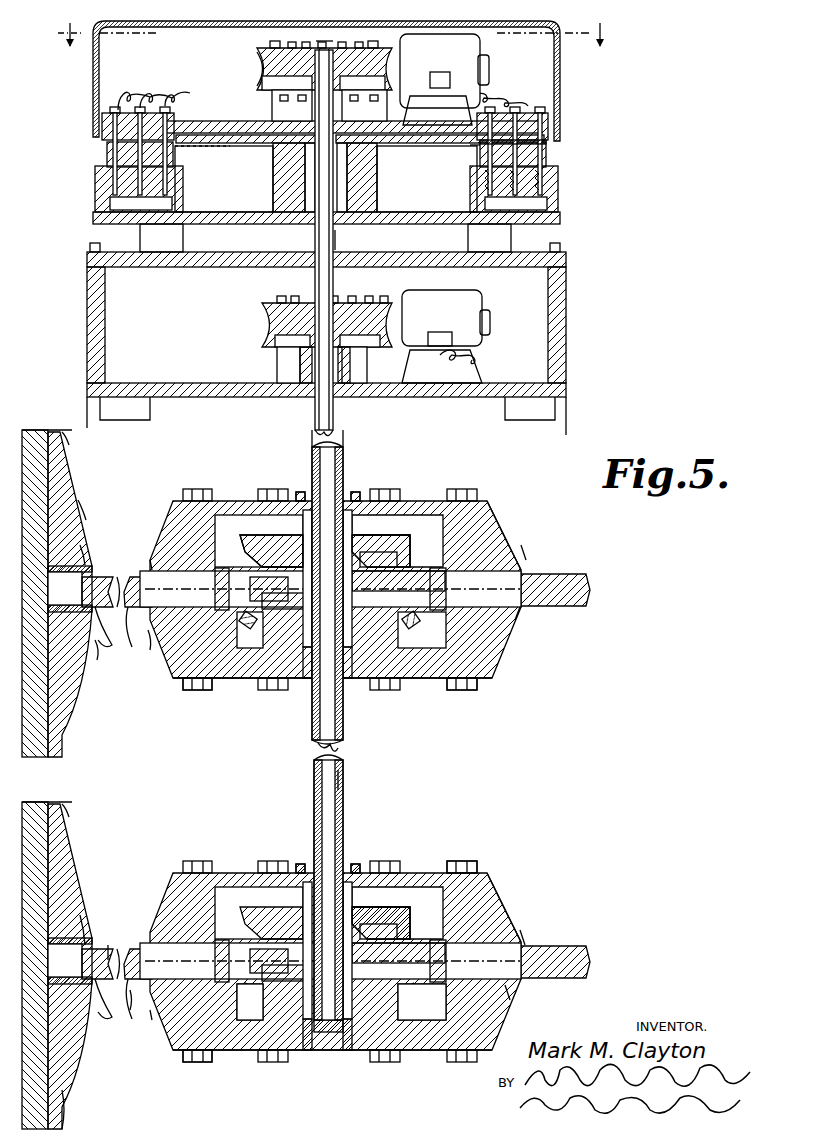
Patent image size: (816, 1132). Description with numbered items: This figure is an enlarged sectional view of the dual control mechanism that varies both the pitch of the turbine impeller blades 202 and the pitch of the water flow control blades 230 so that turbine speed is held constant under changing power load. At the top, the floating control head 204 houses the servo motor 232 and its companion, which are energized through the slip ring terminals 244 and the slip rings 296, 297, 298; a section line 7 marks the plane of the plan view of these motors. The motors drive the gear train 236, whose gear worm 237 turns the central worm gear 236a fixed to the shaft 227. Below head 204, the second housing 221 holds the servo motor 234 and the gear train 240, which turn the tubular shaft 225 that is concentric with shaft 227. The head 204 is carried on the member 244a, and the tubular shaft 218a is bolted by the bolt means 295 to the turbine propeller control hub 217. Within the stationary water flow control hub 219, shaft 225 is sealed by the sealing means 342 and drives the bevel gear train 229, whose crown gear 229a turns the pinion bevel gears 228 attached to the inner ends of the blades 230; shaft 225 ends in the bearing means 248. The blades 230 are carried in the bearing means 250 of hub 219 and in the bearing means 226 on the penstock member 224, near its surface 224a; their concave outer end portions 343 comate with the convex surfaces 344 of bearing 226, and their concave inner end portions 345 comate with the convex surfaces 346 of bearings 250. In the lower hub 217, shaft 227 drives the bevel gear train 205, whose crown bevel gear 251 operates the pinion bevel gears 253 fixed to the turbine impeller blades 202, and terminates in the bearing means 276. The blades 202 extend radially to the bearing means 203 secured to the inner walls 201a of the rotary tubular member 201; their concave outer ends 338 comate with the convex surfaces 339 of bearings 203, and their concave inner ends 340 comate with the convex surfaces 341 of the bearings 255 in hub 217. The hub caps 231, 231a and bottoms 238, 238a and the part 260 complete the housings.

The section line 7- 7 is at (342, 36).
The rotary tubular member 201 is at (58, 803).
The inner walls of rotary tubular member 201a is at (62, 806).
The turbine impeller blades 202 is at (135, 940).
The bearing means 203 is at (80, 912).
The servo motor housing / floating control head 204 is at (93, 70).
The bevel gear train 205 is at (420, 872).
The turbine propeller control hub 217 is at (247, 872).
The tubular shaft 218a is at (340, 237).
The water flow control hub 219 is at (227, 498).
The servo motor housing 221 is at (566, 337).
The penstock member 224 is at (50, 432).
The surface of penstock member 224a is at (62, 435).
The tubular shaft 225 is at (345, 440).
The bearing means 226 is at (80, 545).
The shaft 227 is at (318, 237).
The pinion bevel gears 228 is at (215, 685).
The bevel gear train 229 is at (262, 520).
The crown gear 229a is at (400, 530).
The water flow control blades 230 is at (545, 568).
The bearing cap 231 is at (500, 910).
The bearing cap 231a is at (495, 535).
The servo motor 232 is at (462, 60).
The servo motor 234 is at (470, 310).
The gear train 236 is at (250, 50).
The central worm gear 236a is at (250, 72).
The gear worm 237 is at (340, 42).
The housing bottom 238 is at (360, 1056).
The housing bottom 238a is at (250, 682).
The gear train 240 is at (265, 302).
The slip ring terminals 244 is at (118, 110).
The support member 244a is at (241, 130).
The bearing means 248 is at (352, 690).
The bearing means 250 is at (155, 565).
The crown bevel gear 251 is at (392, 900).
The pinion bevel gears 253 is at (245, 1060).
The bearings 255 is at (510, 1000).
The bearing 260 is at (480, 872).
The bearing means 276 is at (322, 1048).
The bolt means 295 is at (385, 900).
The slip ring 296 is at (470, 147).
The slip ring 297 is at (550, 162).
The slip ring 298 is at (548, 146).
The outer circumferential end surface portions 338 is at (108, 945).
The arcuately convex external surface portions 339 is at (78, 1080).
The innermost central end surface portions 340 is at (535, 942).
The arcuate convex surface portions 341 is at (515, 922).
The sealing means 342 is at (348, 488).
The outer circumferential end surface portions 343 is at (97, 645).
The arcuately convex surface portions 344 is at (80, 500).
The innermost central end surface portions 345 is at (525, 548).
The arcuate convex surface portions 346 is at (524, 621).